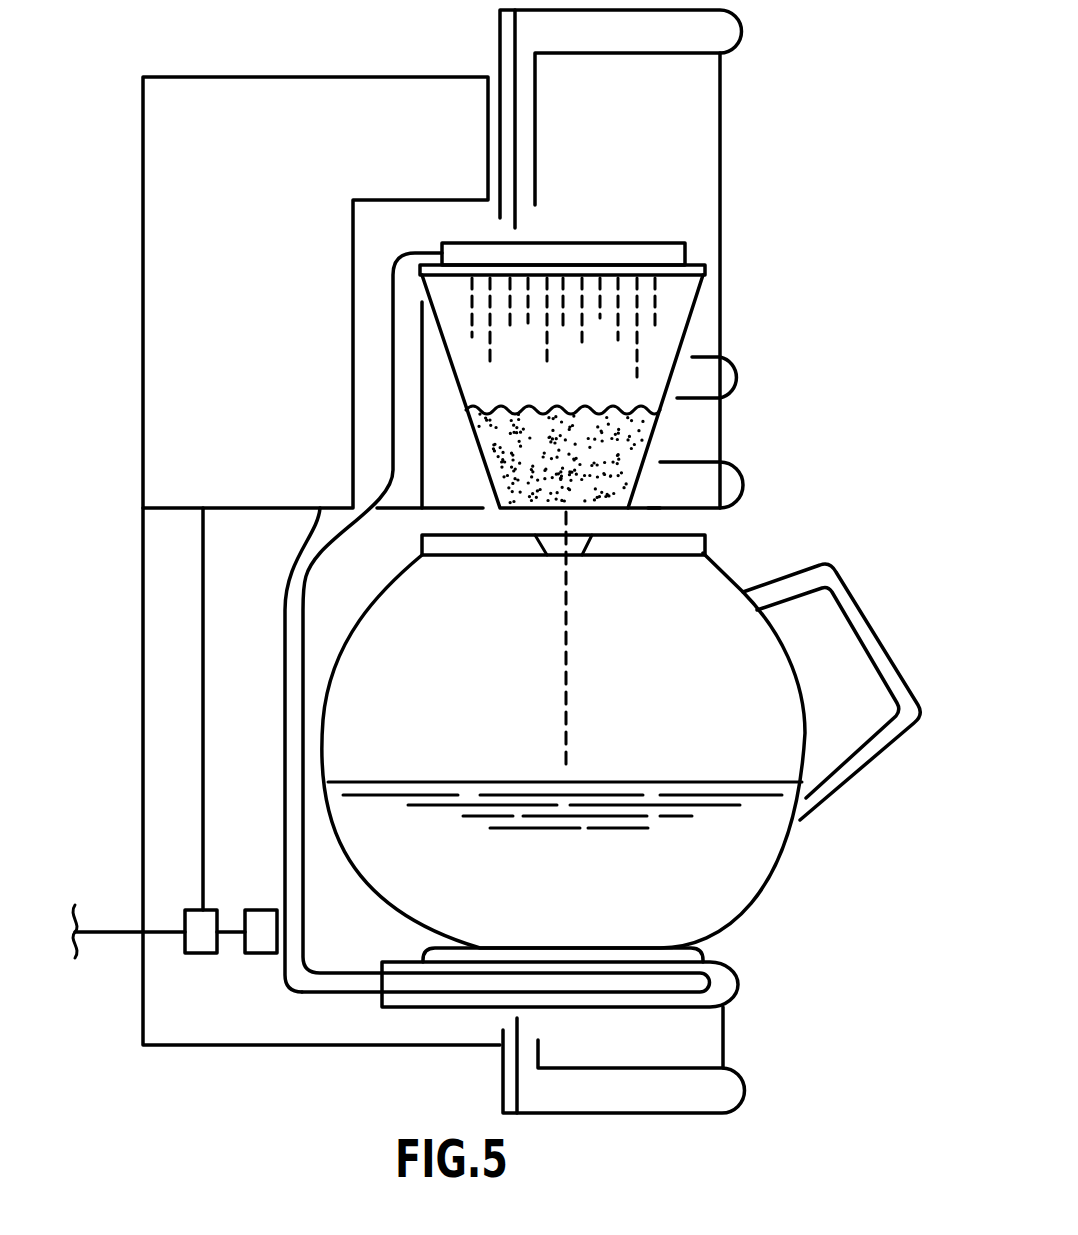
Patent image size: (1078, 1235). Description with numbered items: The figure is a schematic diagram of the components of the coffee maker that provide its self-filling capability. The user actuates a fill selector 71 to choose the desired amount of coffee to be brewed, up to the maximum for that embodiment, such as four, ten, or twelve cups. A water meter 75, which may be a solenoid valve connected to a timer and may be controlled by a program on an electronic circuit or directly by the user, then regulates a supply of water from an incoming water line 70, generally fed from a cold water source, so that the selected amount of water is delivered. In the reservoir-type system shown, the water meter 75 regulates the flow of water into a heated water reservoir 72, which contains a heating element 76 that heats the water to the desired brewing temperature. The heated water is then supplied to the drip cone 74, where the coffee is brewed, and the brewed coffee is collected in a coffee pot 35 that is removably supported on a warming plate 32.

The water reservoir 72 is at (270, 308).
The drip cone 74 is at (693, 320).
The coffee pot 35 is at (787, 850).
The warming plate 32 is at (703, 948).
The heating element 76 is at (712, 985).
The incoming water line 70 is at (118, 932).
The fill selector 71 is at (258, 910).
The water meter 75 is at (198, 953).